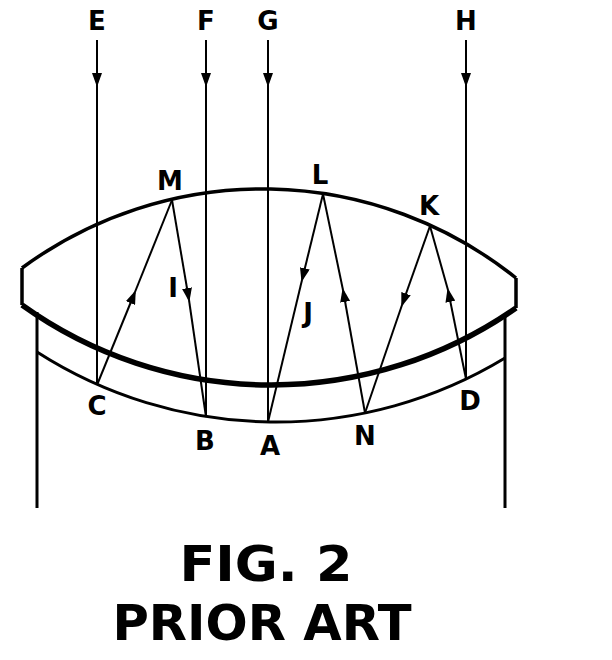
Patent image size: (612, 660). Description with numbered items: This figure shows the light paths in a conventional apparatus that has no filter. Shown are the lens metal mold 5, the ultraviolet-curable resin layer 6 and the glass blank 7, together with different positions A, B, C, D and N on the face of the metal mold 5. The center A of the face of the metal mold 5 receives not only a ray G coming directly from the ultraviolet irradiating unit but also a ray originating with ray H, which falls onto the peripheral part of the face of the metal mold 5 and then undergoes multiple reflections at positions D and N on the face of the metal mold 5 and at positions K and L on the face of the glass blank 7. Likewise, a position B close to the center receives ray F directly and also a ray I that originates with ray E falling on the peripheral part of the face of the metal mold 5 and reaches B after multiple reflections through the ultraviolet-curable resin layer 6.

The lens metal mold 5 is at (488, 472).
The ultraviolet-curable resin layer 6 is at (493, 342).
The glass blank 7 is at (503, 293).